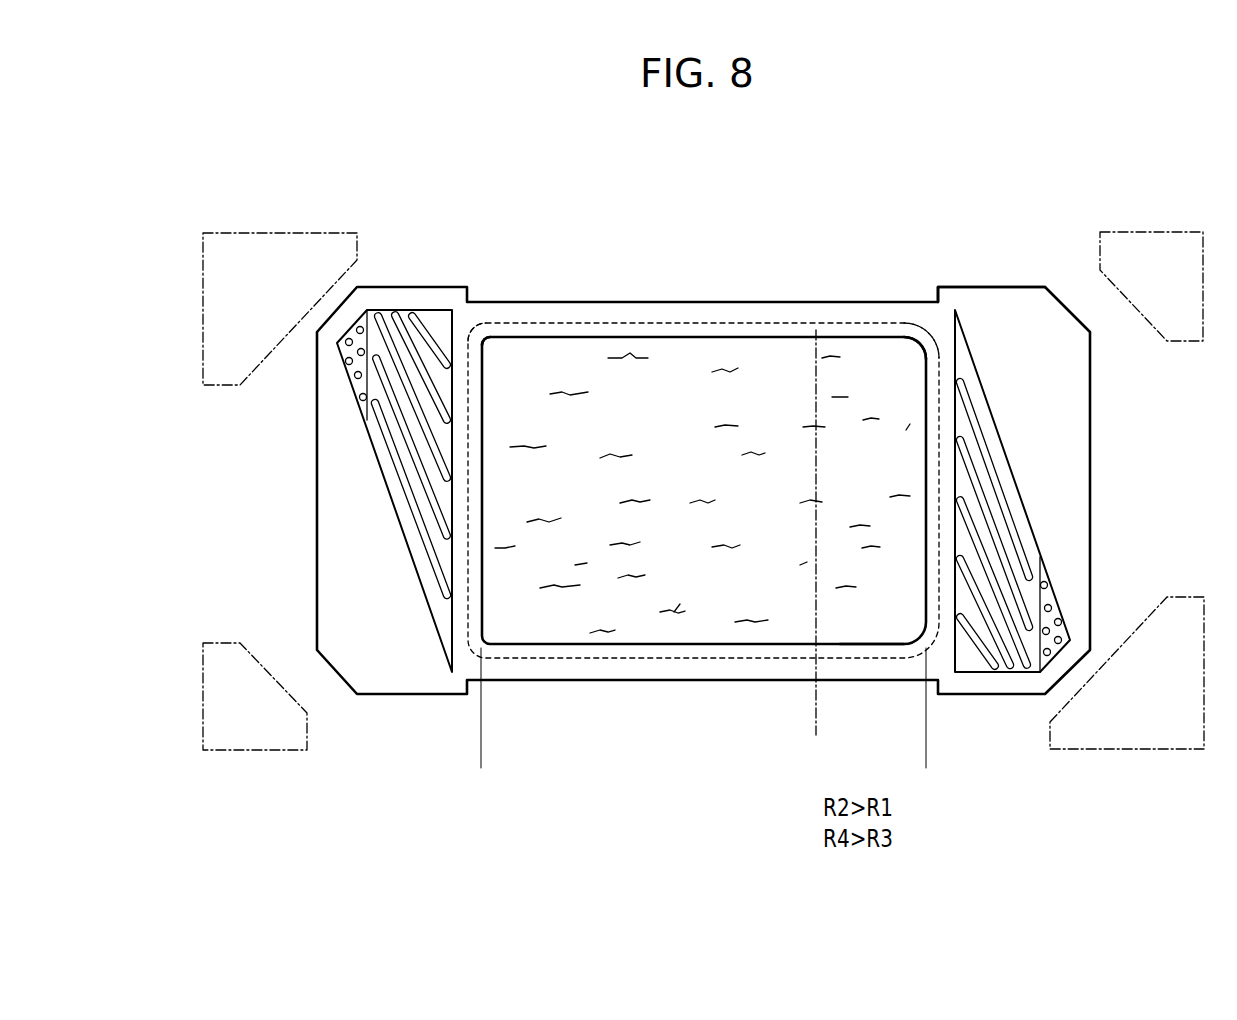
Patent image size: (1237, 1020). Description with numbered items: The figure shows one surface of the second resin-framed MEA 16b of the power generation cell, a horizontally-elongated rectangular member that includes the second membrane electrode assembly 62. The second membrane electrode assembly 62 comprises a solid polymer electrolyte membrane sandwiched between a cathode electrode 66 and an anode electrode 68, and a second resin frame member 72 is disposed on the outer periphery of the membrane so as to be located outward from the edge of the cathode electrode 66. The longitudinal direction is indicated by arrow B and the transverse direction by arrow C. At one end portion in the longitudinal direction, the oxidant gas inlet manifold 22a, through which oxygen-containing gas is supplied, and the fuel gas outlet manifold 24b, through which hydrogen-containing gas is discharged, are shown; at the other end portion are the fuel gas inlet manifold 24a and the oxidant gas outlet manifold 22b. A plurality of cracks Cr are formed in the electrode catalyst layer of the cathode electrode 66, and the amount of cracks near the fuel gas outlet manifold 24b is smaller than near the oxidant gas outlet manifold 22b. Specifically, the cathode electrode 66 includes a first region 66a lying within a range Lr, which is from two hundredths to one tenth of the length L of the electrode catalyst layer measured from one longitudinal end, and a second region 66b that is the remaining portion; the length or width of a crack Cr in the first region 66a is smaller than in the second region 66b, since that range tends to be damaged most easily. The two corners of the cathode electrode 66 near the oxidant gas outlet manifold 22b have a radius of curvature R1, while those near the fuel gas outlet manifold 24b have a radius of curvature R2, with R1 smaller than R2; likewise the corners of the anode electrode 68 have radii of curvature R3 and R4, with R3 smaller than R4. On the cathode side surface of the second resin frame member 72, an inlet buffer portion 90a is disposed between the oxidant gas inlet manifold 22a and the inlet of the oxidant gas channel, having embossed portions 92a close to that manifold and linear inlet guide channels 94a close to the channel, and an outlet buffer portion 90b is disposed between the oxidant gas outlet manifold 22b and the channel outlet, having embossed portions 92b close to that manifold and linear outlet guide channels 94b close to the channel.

The second resin-framed MEA 16b is at (469, 191).
The second resin frame member 72 is at (955, 284).
The outlet buffer portion 90b is at (348, 440).
The embossed portions 92b is at (355, 376).
The linear outlet guide channels 94b is at (437, 470).
The inlet buffer portion 90a is at (1057, 546).
The embossed portions 92a is at (1060, 600).
The linear inlet guide channels 94a is at (1005, 542).
The second membrane electrode assembly 62 is at (704, 468).
The cathode electrode 66 is at (704, 468).
The first region 66a is at (847, 355).
The second region 66b is at (779, 355).
The anode electrode 68 is at (577, 326).
The cracks Cr is at (732, 368).
The radius of curvature R1 is at (489, 343).
The radius of curvature R2 is at (921, 360).
The radius of curvature R3 is at (478, 339).
The radius of curvature R4 is at (913, 334).
The length of the electrode catalyst layer L is at (926, 762).
The first region range Lr is at (926, 731).
The direction of arrow B is at (430, 823).
The direction of arrow C is at (202, 540).
The oxidant gas outlet manifold 22b is at (245, 253).
The fuel gas outlet manifold 24b is at (1120, 250).
The fuel gas inlet manifold 24a is at (258, 728).
The oxidant gas inlet manifold 22a is at (1140, 730).